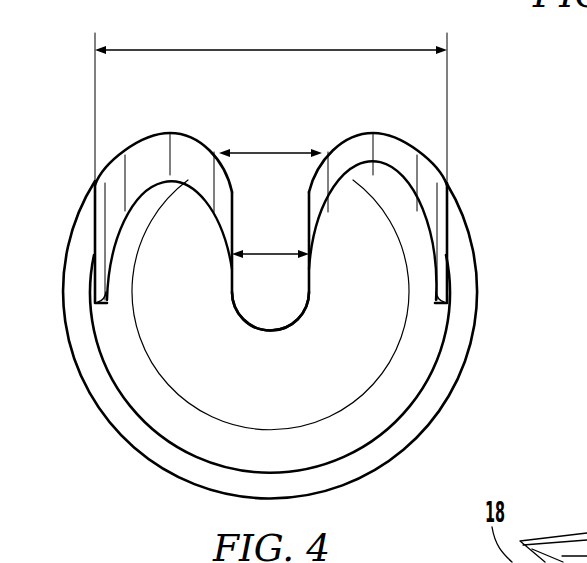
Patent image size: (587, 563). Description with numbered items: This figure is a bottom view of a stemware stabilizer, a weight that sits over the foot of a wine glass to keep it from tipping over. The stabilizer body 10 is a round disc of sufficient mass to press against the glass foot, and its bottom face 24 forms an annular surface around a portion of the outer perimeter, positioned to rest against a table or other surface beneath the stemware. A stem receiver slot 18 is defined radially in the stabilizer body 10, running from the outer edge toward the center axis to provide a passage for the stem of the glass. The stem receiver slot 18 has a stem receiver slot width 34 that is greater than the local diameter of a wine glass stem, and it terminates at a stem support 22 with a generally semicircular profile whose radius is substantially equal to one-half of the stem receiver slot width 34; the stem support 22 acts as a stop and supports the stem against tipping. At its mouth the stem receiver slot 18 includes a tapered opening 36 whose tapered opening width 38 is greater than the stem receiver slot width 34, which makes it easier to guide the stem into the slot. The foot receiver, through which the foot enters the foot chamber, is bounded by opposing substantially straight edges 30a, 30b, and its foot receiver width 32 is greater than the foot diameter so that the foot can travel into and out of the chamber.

The stabilizer body 10 is at (291, 250).
The stem receiver slot 18 is at (245, 283).
The stem support 22 is at (293, 327).
The bottom face 24 is at (417, 410).
The substantially straight edge 30a is at (94, 275).
The substantially straight edge 30b is at (446, 248).
The foot receiver width 32 is at (205, 50).
The stem receiver slot width 34 is at (270, 253).
The tapered opening 36 is at (253, 127).
The tapered opening width 38 is at (270, 152).